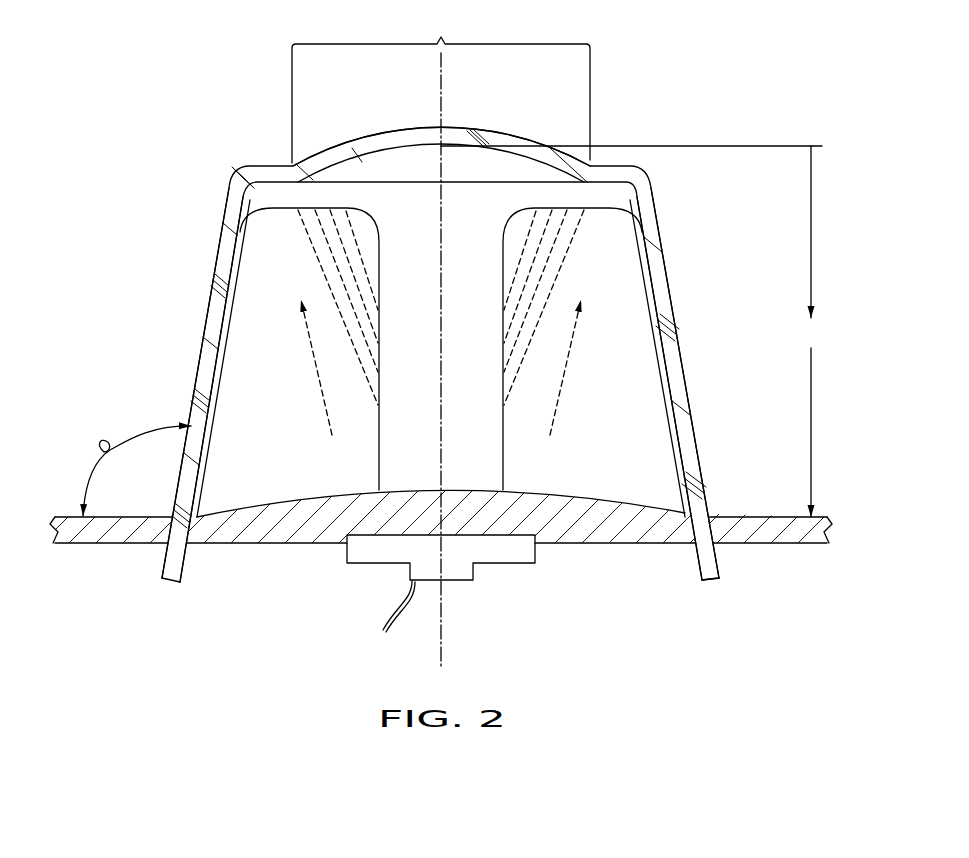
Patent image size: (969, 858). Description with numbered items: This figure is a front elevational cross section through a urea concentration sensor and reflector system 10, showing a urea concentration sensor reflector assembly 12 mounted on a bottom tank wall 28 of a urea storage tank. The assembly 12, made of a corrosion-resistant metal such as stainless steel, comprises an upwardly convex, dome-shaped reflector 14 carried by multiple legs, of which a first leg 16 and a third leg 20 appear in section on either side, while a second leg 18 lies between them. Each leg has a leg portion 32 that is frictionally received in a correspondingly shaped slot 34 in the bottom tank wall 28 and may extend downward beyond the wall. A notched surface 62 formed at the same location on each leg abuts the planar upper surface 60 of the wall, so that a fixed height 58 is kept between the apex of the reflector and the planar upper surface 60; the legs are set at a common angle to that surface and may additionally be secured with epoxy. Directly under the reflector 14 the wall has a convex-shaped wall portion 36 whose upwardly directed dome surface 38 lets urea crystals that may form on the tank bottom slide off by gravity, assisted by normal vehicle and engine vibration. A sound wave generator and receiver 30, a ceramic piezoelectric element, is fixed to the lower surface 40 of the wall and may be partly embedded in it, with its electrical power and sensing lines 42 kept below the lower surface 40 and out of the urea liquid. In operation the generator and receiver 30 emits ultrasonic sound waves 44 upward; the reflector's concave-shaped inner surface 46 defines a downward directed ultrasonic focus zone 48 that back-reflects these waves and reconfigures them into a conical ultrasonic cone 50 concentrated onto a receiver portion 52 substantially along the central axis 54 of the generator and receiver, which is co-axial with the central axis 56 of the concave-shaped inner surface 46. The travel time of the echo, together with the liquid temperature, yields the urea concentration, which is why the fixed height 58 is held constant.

The urea concentration sensor and reflector system 10 is at (706, 88).
The urea concentration sensor reflector assembly 12 is at (678, 232).
The reflector 14 is at (498, 136).
The first leg 16 is at (208, 360).
The second leg 18 is at (503, 445).
The third leg 20 is at (684, 384).
The bottom tank wall 28 is at (820, 528).
The sound wave generator and receiver 30 is at (462, 573).
The leg portion 32 is at (700, 580).
The slot 34 is at (706, 515).
The convex-shaped wall portion 36 is at (594, 520).
The dome surface 38 is at (568, 490).
The lower surface 40 is at (233, 547).
The electrical power and sensing lines 42 is at (380, 614).
The ultrasonic sound waves 44 is at (318, 378).
The concave-shaped inner surface 46 is at (427, 152).
The ultrasonic focus zone 48 is at (441, 88).
The ultrasonic cone 50 is at (552, 294).
The receiver portion 52 is at (441, 535).
The central axis 54 is at (441, 632).
The central axis 56 is at (441, 88).
The fixed height 58 is at (631, 331).
The planar upper surface 60 is at (826, 517).
The notched surface 62 is at (687, 522).